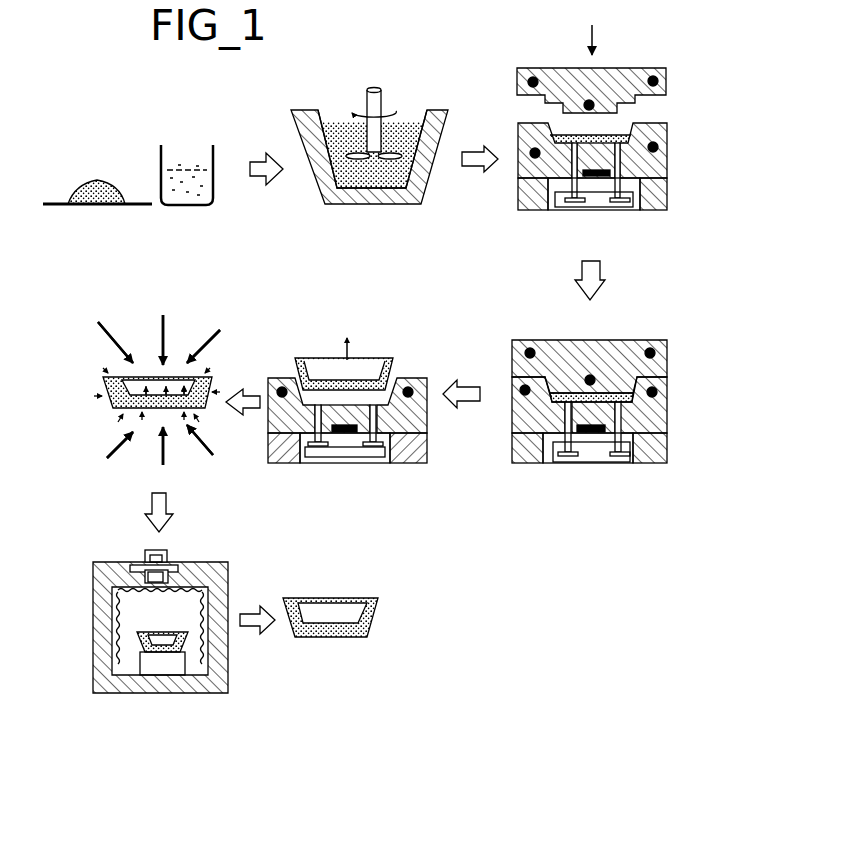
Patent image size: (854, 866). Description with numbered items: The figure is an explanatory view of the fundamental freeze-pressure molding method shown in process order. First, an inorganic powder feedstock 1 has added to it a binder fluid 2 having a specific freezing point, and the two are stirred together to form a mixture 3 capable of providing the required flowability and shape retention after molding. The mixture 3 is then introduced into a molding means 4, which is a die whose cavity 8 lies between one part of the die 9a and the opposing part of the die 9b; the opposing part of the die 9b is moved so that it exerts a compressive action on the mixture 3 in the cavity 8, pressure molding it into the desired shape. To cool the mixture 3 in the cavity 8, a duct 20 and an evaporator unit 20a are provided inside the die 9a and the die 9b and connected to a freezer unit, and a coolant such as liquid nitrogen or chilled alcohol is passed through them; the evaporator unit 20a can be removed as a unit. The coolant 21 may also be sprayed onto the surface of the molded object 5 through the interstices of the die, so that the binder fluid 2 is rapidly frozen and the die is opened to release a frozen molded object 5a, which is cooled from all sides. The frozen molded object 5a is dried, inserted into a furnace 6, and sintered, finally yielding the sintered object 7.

The inorganic powder feedstock 1 is at (98, 198).
The binder fluid 2 is at (184, 197).
The mixture 3 is at (368, 170).
The molding means 4 is at (585, 130).
The molded object 5 is at (618, 392).
The frozen molded object 5a is at (178, 395).
The furnace 6 is at (222, 570).
The sintered object 7 is at (308, 608).
The cavity 8 is at (625, 125).
The die part 9a is at (530, 167).
The opposing die part 9b is at (622, 87).
The duct 20 is at (654, 70).
The evaporator unit 20a is at (593, 178).
The coolant 21 is at (527, 340).